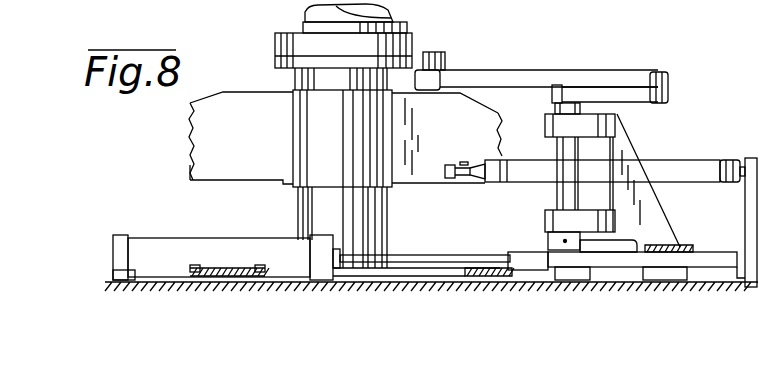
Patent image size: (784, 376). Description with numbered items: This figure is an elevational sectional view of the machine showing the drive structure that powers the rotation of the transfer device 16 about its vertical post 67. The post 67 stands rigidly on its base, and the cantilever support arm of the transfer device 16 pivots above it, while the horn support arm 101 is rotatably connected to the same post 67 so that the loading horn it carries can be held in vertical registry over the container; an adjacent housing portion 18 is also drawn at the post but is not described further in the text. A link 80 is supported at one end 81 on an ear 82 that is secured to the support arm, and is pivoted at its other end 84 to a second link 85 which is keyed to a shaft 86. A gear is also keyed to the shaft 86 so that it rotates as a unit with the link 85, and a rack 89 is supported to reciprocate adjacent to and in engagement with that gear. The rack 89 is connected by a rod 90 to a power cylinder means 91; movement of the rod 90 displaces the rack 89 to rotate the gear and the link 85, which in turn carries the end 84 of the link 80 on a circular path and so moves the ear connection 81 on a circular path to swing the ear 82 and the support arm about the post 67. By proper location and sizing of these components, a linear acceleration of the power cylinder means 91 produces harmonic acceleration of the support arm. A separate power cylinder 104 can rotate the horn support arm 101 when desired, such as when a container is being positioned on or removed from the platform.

The transfer device 16 is at (297, 22).
The housing 18 is at (187, 167).
The vertical post 67 is at (306, 207).
The link 80 is at (522, 80).
The end of link 81 is at (441, 53).
The ear 82 is at (417, 57).
The other end of link 84 is at (656, 72).
The link 85 is at (603, 93).
The shaft 86 is at (561, 197).
The rack 89 is at (712, 253).
The rod 90 is at (452, 256).
The power cylinder means 91 is at (173, 247).
The horn support arm 101 is at (196, 137).
The power cylinder 104 is at (694, 161).